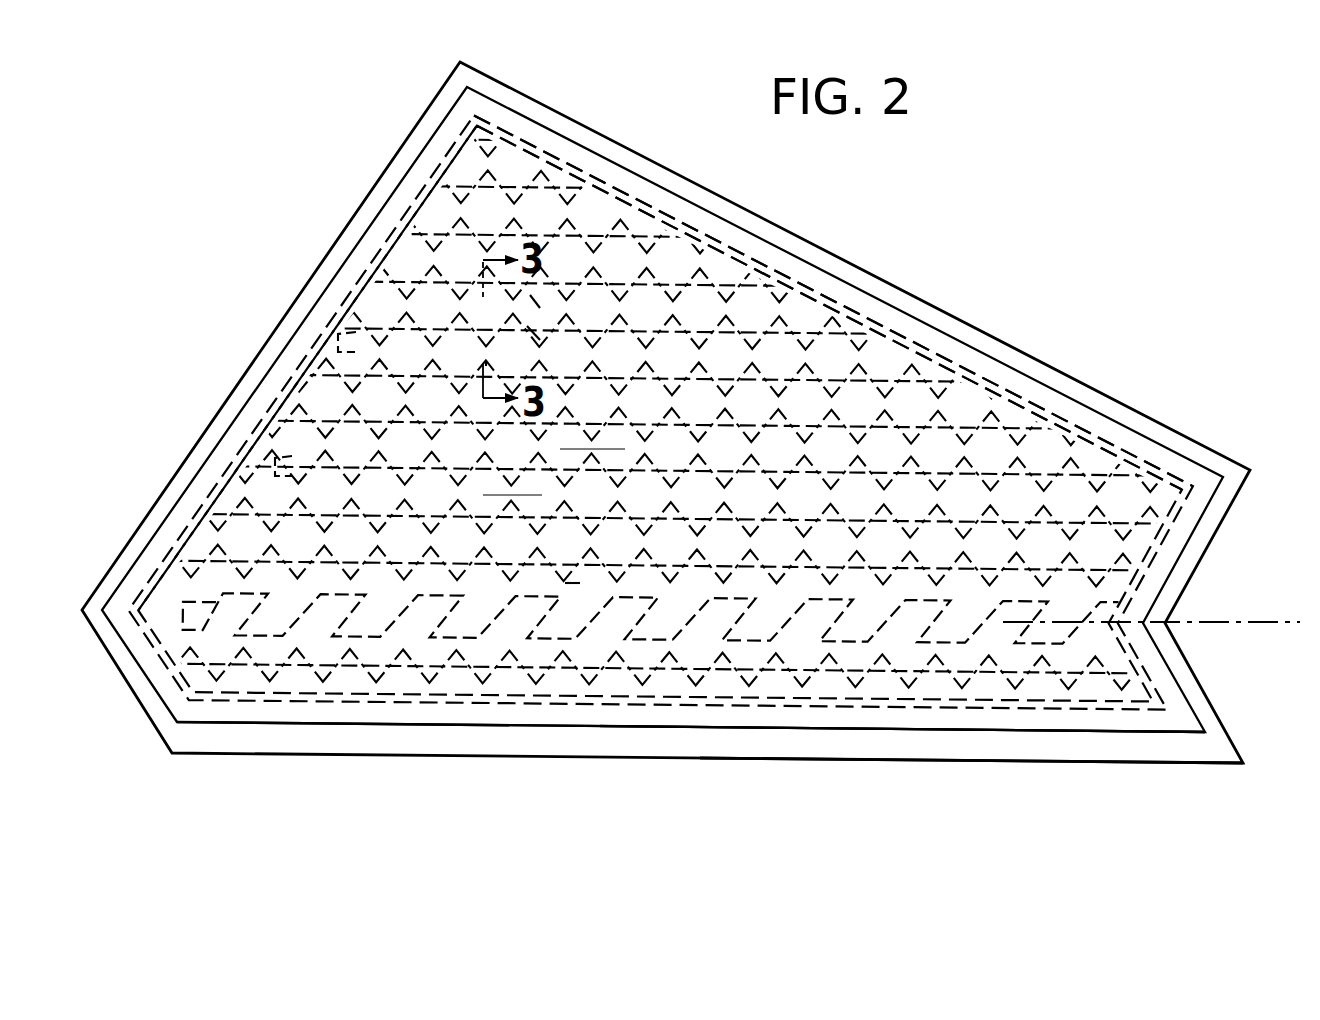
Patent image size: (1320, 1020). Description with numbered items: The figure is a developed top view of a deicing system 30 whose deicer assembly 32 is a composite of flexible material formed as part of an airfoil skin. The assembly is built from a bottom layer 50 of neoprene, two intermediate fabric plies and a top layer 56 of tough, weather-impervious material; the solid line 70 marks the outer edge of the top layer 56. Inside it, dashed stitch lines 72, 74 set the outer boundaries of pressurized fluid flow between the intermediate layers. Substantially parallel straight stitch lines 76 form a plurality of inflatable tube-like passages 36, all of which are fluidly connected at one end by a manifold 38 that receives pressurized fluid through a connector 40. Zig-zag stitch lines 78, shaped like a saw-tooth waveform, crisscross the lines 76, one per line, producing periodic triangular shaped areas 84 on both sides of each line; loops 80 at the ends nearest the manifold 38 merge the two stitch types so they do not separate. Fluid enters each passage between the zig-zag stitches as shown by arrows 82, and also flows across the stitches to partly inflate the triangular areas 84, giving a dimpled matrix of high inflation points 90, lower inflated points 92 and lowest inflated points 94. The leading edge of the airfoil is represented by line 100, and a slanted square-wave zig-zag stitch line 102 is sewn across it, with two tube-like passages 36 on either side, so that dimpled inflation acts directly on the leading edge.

The deicing system 30 is at (972, 256).
The deicer assembly 32 is at (412, 116).
The tube-like passages 36 is at (744, 250).
The manifold 38 is at (282, 396).
The connector 40 is at (340, 340).
The bottom layer 50 is at (743, 743).
The top layer 56 is at (845, 717).
The solid line 70 is at (938, 730).
The dashed stitch line 72 is at (457, 693).
The dashed stitch line 74 is at (510, 702).
The straight stitch lines 76 is at (883, 303).
The zig-zag stitch lines 78 is at (713, 197).
The loops 80 is at (276, 463).
The arrows 82 is at (625, 447).
The triangular shaped areas 84 is at (572, 580).
The high inflation points 90 is at (535, 302).
The lower inflated points 92 is at (535, 335).
The lowest inflated points 94 is at (449, 326).
The leading edge line 100 is at (1225, 621).
The zig-zag stitch line 102 is at (360, 637).